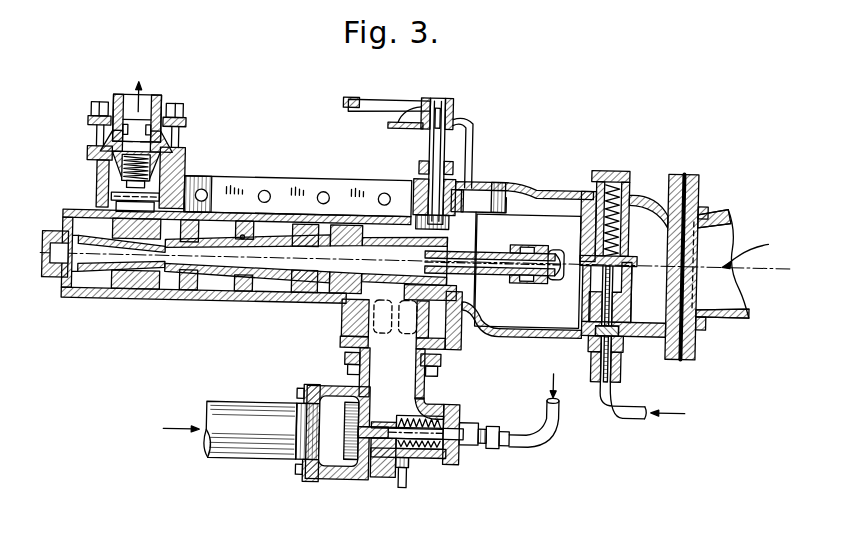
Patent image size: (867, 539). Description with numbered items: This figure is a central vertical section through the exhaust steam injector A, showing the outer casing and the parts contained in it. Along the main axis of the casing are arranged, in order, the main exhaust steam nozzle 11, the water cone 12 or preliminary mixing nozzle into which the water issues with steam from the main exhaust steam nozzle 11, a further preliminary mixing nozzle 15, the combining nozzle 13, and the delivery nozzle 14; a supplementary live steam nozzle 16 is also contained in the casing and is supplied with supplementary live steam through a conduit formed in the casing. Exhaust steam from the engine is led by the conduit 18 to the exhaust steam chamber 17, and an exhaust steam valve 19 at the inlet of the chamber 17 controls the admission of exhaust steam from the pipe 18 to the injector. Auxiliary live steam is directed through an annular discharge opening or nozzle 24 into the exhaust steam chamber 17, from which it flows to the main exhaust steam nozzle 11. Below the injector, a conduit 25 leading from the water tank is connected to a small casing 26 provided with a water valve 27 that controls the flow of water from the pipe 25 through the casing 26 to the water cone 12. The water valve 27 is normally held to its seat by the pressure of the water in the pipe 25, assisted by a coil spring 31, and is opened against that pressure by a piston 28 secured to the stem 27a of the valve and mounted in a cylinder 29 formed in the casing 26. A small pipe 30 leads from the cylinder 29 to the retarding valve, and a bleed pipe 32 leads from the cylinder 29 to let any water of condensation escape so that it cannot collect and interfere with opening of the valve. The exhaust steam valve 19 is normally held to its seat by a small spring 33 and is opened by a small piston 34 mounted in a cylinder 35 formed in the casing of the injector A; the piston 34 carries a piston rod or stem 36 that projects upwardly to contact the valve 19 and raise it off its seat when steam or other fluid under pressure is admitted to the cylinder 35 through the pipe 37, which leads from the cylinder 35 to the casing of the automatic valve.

The exhaust steam injector A is at (527, 187).
The main exhaust steam nozzle 11 is at (409, 268).
The water cone 12 is at (345, 259).
The combining nozzle 13 is at (247, 256).
The delivery nozzle 14 is at (118, 253).
The further preliminary mixing nozzle 15 is at (307, 258).
The supplementary live steam nozzle 16 is at (483, 254).
The exhaust steam chamber 17 is at (528, 271).
The exhaust steam conduit 18 is at (717, 267).
The exhaust steam valve 19 is at (620, 257).
The annular discharge opening 24 is at (533, 244).
The water conduit 25 is at (257, 418).
The small casing 26 is at (393, 359).
The water valve 27 is at (360, 430).
The valve stem 27a is at (393, 439).
The piston 28 is at (455, 416).
The cylinder 29 is at (437, 458).
The small pipe 30 is at (528, 440).
The coil spring 31 is at (425, 418).
The bleed pipe 32 is at (406, 488).
The small spring 33 is at (632, 178).
The small piston 34 is at (619, 333).
The cylinder 35 is at (589, 309).
The piston rod 36 is at (617, 278).
The pipe 37 is at (630, 414).